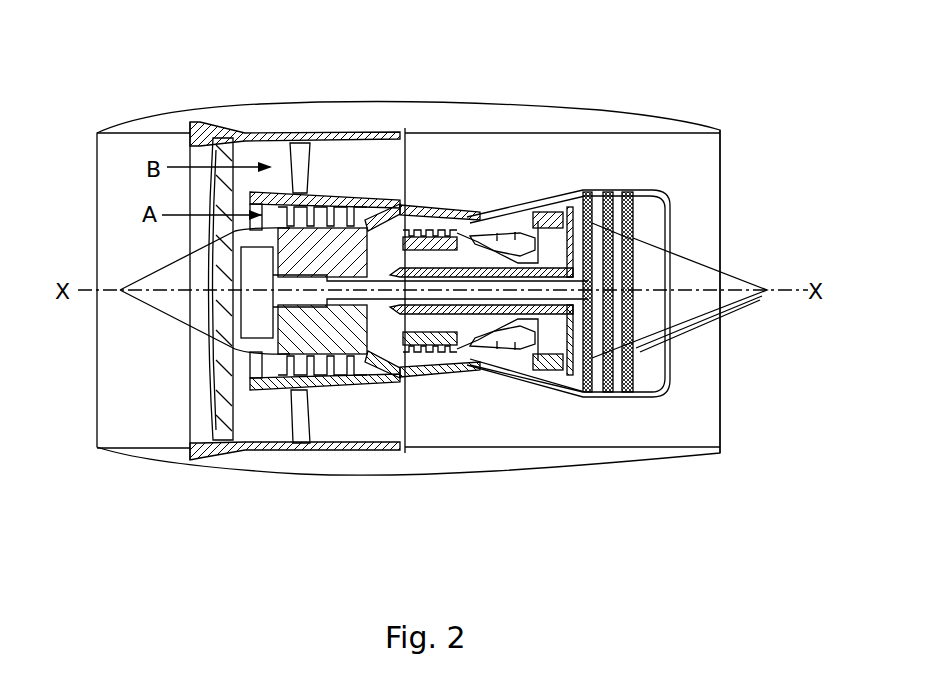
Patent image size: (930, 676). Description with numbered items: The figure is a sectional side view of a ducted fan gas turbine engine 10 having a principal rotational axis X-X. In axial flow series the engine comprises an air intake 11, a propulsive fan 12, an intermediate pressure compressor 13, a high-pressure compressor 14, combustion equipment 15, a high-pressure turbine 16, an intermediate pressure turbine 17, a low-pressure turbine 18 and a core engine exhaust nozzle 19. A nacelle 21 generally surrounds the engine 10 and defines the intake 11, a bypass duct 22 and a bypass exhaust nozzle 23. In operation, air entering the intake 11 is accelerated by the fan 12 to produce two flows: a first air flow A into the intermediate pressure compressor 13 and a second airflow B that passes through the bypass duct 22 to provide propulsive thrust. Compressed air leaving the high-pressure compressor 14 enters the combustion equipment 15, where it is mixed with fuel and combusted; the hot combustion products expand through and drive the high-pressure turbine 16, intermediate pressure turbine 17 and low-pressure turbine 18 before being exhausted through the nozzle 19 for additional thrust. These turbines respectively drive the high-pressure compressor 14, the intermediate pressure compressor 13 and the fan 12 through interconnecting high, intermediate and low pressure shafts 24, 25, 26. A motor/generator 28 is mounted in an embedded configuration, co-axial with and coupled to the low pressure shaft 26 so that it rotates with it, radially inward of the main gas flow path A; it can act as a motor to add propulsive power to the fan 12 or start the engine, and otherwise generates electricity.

The ducted fan gas turbine engine 10 is at (160, 85).
The air intake 11 is at (142, 134).
The propulsive fan 12 is at (208, 398).
The intermediate pressure compressor 13 is at (340, 390).
The high-pressure compressor 14 is at (434, 236).
The combustion equipment 15 is at (472, 348).
The high-pressure turbine 16 is at (530, 362).
The intermediate pressure turbine 17 is at (563, 213).
The low-pressure turbine 18 is at (583, 387).
The core engine exhaust nozzle 19 is at (665, 187).
The nacelle 21 is at (307, 103).
The bypass duct 22 is at (633, 437).
The bypass exhaust nozzle 23 is at (722, 130).
The high pressure shaft 24 is at (501, 262).
The intermediate pressure shaft 25 is at (545, 365).
The low pressure shaft 26 is at (330, 298).
The motor/generator 28 is at (245, 270).